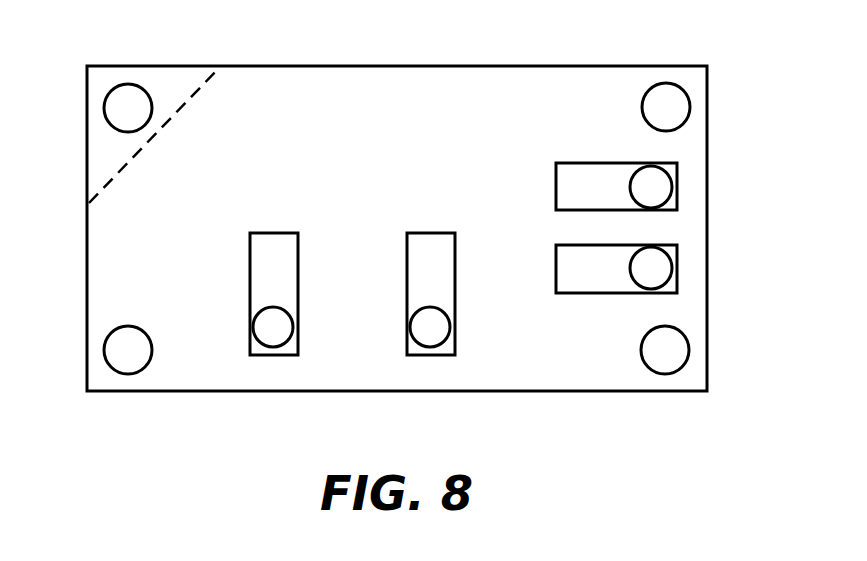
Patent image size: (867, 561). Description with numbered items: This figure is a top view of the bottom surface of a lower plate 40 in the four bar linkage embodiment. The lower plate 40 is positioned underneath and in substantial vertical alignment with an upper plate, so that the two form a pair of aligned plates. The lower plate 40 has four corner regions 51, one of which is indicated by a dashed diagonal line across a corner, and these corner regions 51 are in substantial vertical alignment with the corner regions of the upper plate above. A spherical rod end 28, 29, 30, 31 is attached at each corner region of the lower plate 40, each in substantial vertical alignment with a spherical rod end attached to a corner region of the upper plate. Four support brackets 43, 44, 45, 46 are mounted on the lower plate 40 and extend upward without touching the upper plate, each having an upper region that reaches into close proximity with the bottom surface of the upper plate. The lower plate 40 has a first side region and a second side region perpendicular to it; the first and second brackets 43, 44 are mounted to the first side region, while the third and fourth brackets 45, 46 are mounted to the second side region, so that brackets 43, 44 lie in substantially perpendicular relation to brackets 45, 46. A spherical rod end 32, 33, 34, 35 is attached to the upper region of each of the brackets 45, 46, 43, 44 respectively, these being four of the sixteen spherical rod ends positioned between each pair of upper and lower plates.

The spherical rod end 28 is at (118, 108).
The spherical rod end 29 is at (118, 351).
The spherical rod end 30 is at (678, 350).
The spherical rod end 31 is at (679, 108).
The spherical rod end 32 is at (660, 187).
The spherical rod end 33 is at (660, 268).
The spherical rod end 34 is at (270, 340).
The spherical rod end 35 is at (427, 340).
The lower plate 40 is at (323, 136).
The support bracket 43 is at (262, 268).
The support bracket 44 is at (418, 268).
The support bracket 45 is at (566, 183).
The support bracket 46 is at (568, 277).
The corner region 51 is at (163, 83).